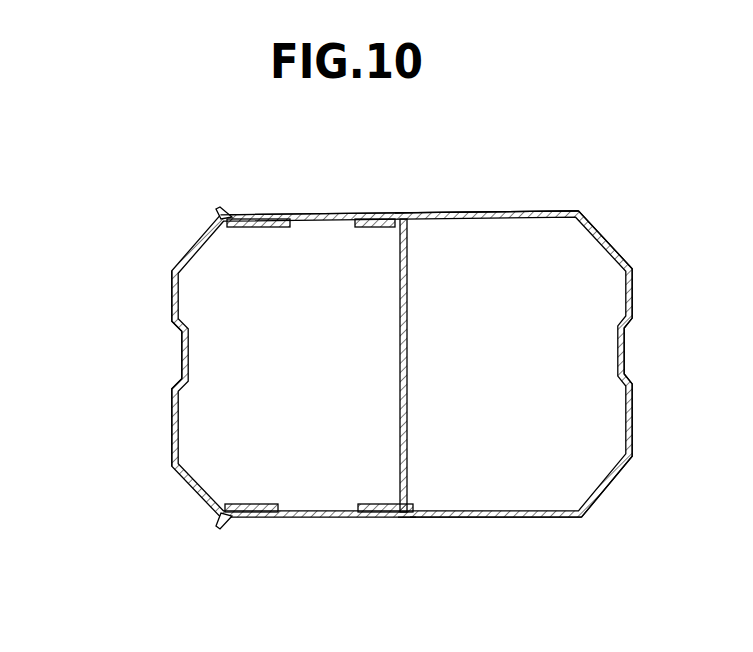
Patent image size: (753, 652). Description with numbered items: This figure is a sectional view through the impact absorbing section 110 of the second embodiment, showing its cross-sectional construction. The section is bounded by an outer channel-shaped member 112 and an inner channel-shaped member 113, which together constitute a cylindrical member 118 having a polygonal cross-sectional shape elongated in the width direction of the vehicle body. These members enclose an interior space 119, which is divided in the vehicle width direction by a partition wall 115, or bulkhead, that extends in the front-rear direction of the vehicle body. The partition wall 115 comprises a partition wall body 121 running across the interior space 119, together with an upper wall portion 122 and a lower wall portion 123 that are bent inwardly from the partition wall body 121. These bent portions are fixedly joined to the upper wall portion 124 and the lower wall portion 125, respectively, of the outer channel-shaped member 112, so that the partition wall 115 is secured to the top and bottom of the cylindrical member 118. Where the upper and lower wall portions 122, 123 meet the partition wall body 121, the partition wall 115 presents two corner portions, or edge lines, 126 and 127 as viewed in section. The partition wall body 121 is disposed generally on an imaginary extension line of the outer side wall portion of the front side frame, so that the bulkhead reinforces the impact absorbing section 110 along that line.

The impact absorbing section 110 is at (137, 61).
The cylindrical member 118 is at (138, 103).
The outer channel-shaped member 112 is at (253, 206).
The inner channel-shaped member 113 is at (166, 300).
The interior space 119 is at (485, 248).
The upper wall portion 124 is at (438, 215).
The lower wall portion 125 is at (498, 520).
The partition wall 115 is at (412, 330).
The partition wall body 121 is at (408, 376).
The upper wall portion 122 is at (381, 211).
The corner portion 126 is at (409, 214).
The lower wall portion 123 is at (379, 517).
The corner portion 127 is at (413, 517).